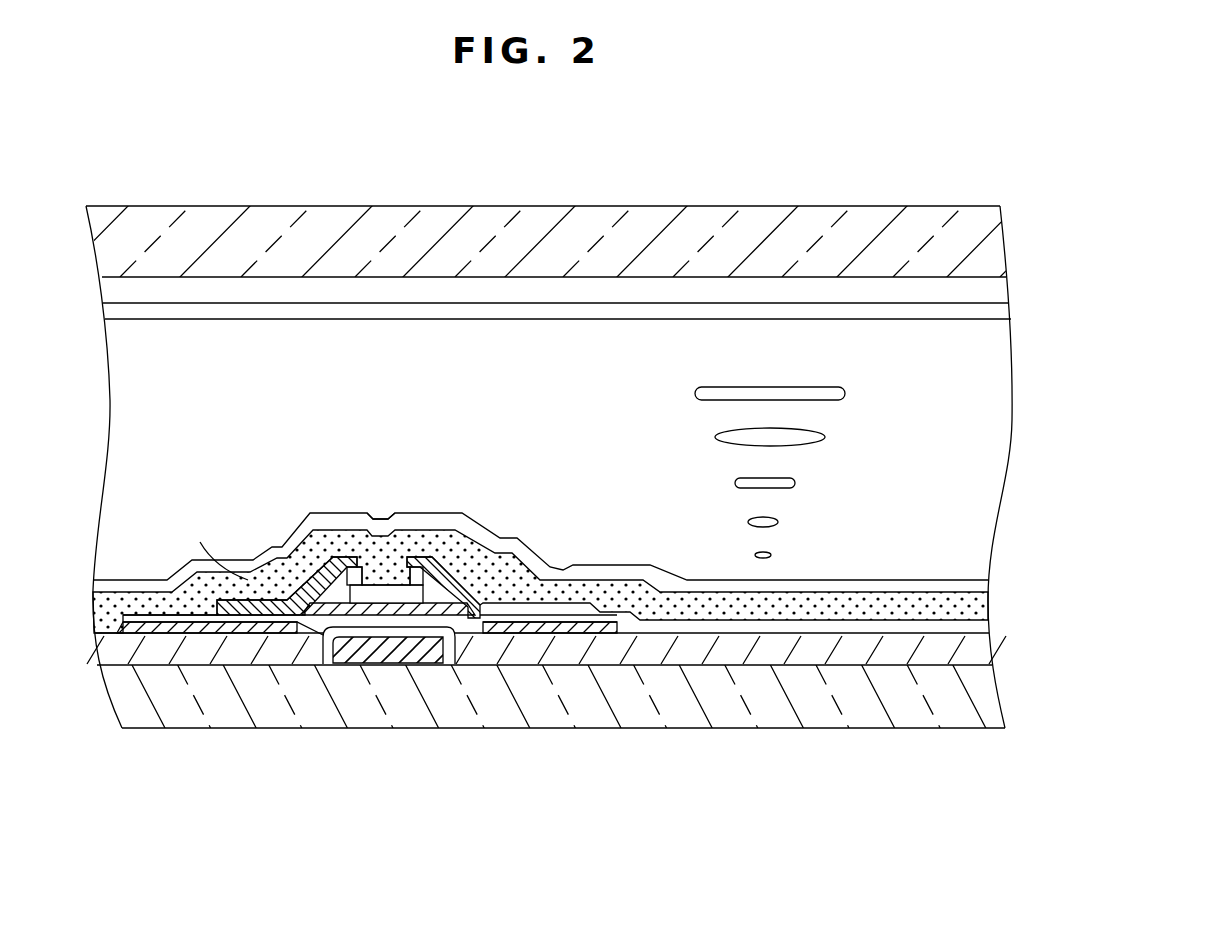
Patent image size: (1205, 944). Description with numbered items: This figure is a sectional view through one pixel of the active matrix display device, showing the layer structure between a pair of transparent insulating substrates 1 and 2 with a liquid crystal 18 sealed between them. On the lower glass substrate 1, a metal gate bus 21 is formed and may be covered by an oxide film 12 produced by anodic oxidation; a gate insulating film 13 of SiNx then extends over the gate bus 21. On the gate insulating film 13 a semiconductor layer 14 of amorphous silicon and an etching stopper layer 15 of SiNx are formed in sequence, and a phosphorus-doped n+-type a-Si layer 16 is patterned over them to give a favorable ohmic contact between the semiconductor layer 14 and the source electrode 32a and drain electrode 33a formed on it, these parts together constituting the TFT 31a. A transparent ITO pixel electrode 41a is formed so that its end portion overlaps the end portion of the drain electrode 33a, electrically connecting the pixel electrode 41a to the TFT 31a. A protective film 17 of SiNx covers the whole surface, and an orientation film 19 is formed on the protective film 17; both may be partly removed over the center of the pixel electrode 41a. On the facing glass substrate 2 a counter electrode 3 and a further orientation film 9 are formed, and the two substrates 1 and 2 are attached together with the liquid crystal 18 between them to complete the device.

The transparent insulating substrate 1 is at (988, 700).
The transparent insulating substrate 2 is at (975, 220).
The counter electrode 3 is at (1009, 285).
The orientation film 9 is at (1012, 318).
The oxide film 12 is at (330, 640).
The gate insulating film 13 is at (108, 652).
The semiconductor layer 14 is at (244, 580).
The etching stopper layer 15 is at (390, 592).
The n+-type a-Si layer 16 is at (213, 546).
The protective film 17 is at (96, 614).
The liquid crystal 18 is at (795, 483).
The orientation film 19 is at (94, 580).
The gate bus 21 is at (440, 652).
The TFT 31a is at (378, 498).
The source electrode 32a is at (308, 585).
The drain electrode 33a is at (490, 562).
The pixel electrode 41a is at (975, 630).